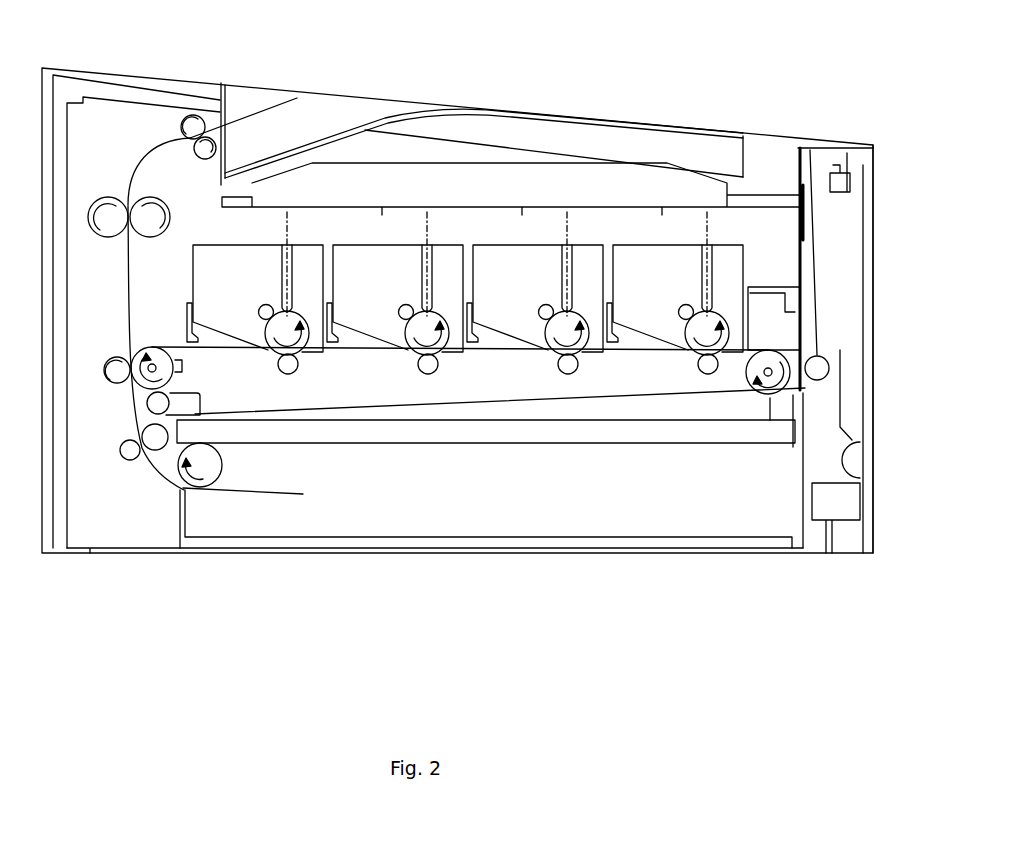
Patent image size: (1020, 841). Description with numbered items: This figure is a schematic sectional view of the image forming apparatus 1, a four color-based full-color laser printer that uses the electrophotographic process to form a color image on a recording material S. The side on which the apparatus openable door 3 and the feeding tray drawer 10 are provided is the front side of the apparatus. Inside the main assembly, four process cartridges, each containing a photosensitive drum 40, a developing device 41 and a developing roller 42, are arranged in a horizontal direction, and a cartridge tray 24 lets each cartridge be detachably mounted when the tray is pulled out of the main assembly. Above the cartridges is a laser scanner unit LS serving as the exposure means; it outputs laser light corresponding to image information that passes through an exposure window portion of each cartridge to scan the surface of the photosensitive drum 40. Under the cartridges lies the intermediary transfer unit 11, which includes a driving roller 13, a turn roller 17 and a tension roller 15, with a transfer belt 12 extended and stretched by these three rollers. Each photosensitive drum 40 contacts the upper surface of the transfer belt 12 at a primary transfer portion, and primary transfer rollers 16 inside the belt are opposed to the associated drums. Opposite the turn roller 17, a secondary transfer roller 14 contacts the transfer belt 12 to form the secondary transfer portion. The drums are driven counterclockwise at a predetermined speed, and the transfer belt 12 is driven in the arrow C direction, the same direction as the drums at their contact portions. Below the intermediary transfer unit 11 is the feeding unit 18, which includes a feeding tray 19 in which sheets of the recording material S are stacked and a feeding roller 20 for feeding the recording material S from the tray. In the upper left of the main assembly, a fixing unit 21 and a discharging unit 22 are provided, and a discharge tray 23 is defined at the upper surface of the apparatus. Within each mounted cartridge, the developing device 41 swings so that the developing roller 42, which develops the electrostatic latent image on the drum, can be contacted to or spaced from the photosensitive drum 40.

The image forming apparatus 1 is at (681, 101).
The apparatus openable door 3 is at (865, 150).
The feeding tray drawer 10 is at (873, 553).
The intermediary transfer unit 11 is at (590, 406).
The transfer belt 12 is at (472, 403).
The driving roller 13 is at (768, 380).
The secondary transfer roller 14 is at (107, 358).
The tension roller 15 is at (158, 410).
The primary transfer rollers 16 is at (292, 372).
The turn roller 17 is at (158, 350).
The feeding unit 18 is at (161, 484).
The feeding tray 19 is at (650, 545).
The feeding roller 20 is at (225, 460).
The fixing unit 21 is at (127, 199).
The discharging unit 22 is at (168, 117).
The discharge tray 23 is at (332, 130).
The cartridge tray 24 is at (772, 305).
The photosensitive drum 40 is at (265, 330).
The developing device 41 is at (224, 245).
The developing roller 42 is at (260, 304).
The laser scanner unit LS is at (500, 180).
The recording material S is at (248, 492).
The arrow C direction C is at (300, 403).